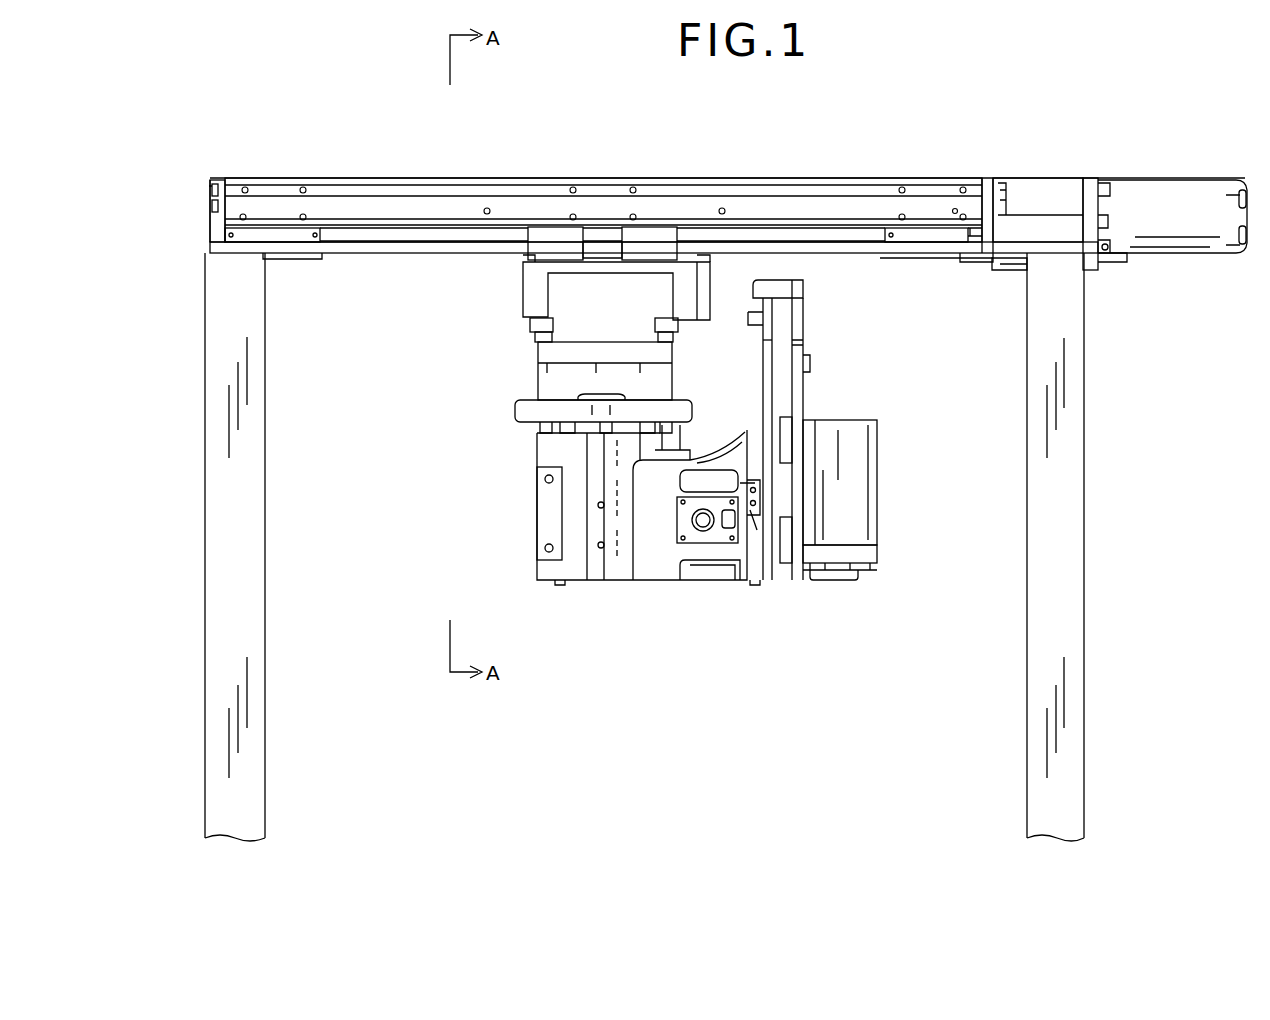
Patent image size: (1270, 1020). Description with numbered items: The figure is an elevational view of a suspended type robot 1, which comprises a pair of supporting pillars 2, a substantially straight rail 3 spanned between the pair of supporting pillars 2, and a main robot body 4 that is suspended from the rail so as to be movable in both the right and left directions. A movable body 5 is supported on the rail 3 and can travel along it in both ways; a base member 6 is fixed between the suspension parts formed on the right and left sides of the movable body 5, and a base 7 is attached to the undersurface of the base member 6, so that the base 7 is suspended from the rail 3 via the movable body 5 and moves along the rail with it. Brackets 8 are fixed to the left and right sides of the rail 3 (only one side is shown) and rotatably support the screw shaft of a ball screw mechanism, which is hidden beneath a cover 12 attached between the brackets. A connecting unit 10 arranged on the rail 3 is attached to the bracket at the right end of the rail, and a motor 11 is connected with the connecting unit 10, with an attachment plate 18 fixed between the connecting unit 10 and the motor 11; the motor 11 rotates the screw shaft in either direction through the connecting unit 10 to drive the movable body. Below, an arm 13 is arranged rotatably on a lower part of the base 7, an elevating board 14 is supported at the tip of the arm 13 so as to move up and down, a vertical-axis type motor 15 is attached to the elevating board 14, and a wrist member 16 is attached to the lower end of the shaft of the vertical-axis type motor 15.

The suspended type robot 1 is at (927, 137).
The supporting pillars 2 is at (265, 703).
The rail 3 is at (385, 254).
The main robot body 4 is at (515, 443).
The movable body 5 is at (550, 262).
The base member 6 is at (540, 318).
The base 7 is at (535, 380).
The brackets 8 is at (210, 228).
The connecting unit 10 is at (1043, 178).
The motor 11 is at (1194, 180).
The cover 12 is at (388, 178).
The arm 13 is at (640, 582).
The elevating board 14 is at (803, 306).
The vertical-axis type motor 15 is at (877, 495).
The wrist member 16 is at (833, 582).
The attachment plate 18 is at (1090, 178).